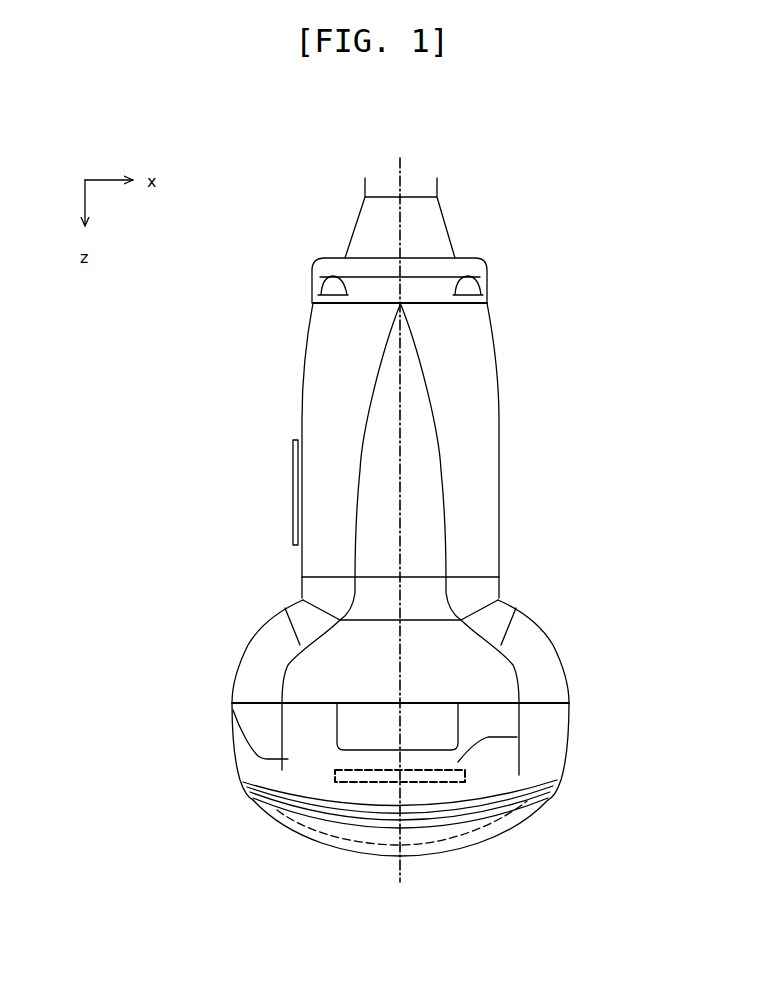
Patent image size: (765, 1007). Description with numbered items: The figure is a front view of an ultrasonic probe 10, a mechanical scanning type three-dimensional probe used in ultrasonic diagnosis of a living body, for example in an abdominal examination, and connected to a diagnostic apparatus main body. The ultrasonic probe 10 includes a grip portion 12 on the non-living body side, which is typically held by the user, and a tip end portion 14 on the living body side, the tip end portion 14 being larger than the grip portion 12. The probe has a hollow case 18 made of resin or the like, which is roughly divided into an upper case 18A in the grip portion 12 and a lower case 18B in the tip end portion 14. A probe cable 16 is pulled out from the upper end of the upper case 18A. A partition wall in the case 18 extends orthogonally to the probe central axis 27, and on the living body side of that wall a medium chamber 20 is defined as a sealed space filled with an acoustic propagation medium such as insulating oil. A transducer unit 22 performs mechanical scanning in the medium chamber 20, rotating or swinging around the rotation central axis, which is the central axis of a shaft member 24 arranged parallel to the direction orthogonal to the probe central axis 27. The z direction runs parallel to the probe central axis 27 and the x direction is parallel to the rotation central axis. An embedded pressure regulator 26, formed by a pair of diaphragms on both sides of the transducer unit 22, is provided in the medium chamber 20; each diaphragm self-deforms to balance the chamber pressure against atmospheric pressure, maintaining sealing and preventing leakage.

The ultrasonic probe 10 is at (262, 343).
The grip portion 12 is at (615, 275).
The tip end portion 14 is at (608, 600).
The probe cable 16 is at (437, 183).
The case 18 is at (300, 418).
The upper case 18A is at (496, 368).
The lower case 18B is at (545, 630).
The medium chamber 20 is at (300, 721).
The transducer unit 22 is at (266, 836).
The shaft member 24 is at (519, 737).
The embedded pressure regulator 26 is at (325, 747).
The probe central axis 27 is at (402, 184).